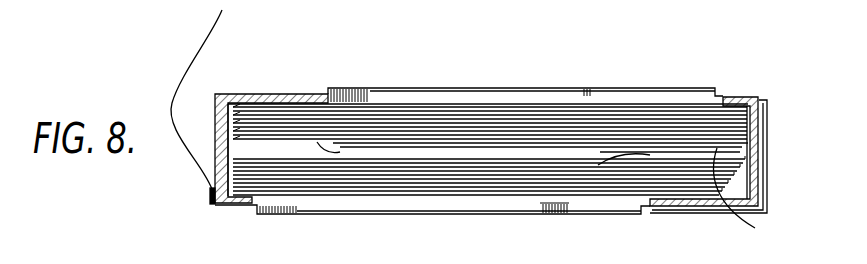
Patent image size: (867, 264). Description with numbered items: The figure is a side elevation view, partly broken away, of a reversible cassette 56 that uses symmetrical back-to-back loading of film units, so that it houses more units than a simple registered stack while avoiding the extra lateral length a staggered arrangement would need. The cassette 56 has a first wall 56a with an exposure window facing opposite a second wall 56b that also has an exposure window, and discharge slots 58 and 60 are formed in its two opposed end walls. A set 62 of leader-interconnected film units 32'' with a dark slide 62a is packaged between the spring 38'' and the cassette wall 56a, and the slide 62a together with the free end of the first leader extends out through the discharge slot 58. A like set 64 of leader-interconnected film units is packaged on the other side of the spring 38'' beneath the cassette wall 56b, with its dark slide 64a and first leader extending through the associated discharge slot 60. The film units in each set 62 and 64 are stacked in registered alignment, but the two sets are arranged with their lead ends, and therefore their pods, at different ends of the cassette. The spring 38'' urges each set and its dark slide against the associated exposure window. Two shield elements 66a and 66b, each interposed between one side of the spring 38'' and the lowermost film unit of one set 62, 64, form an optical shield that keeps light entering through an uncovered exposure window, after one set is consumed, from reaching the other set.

The reversible cassette 56 is at (332, 81).
The first wall 56a is at (724, 99).
The second wall 56b is at (242, 205).
The discharge slot 58 is at (257, 95).
The discharge slot 60 is at (749, 104).
The set of leader-interconnected film units 62 is at (744, 143).
The dark slide 62a is at (182, 78).
The set of leader-interconnected film units 64 is at (728, 156).
The dark slide 64a is at (768, 193).
The shield element 66a is at (340, 159).
The shield element 66b is at (652, 152).
The film units 32'' is at (447, 177).
The spring 38'' is at (484, 179).